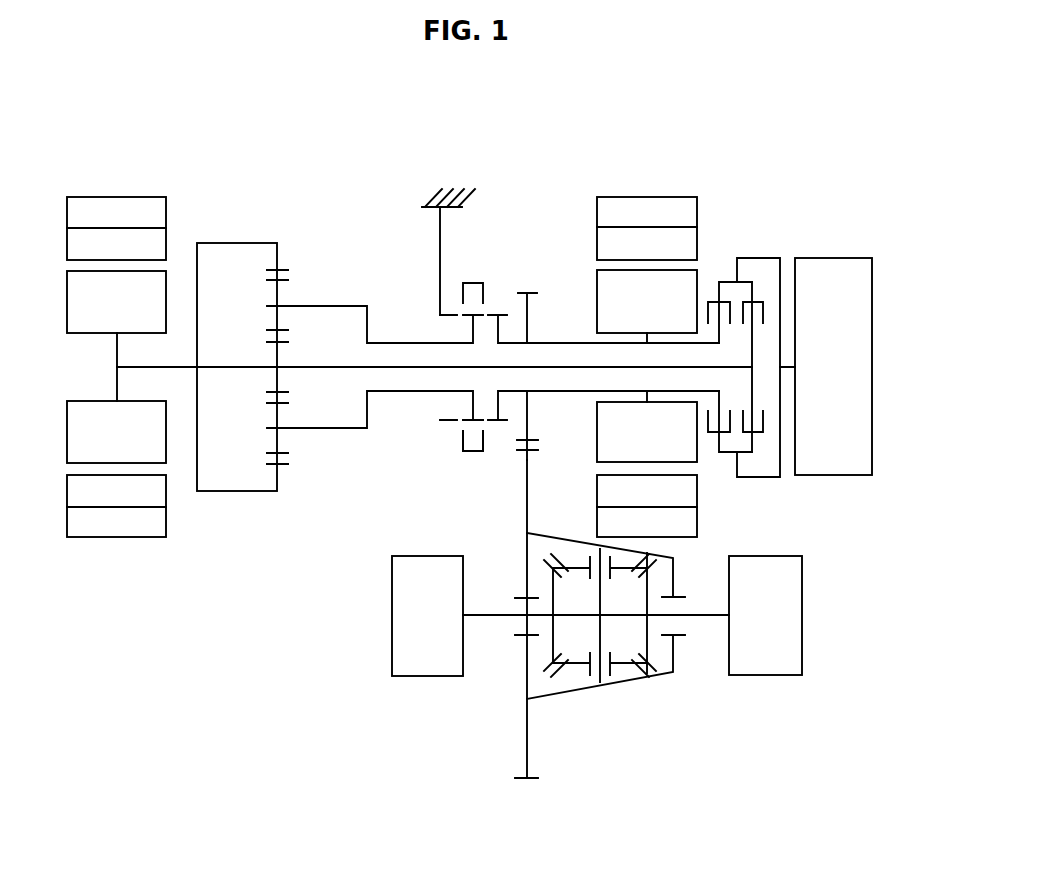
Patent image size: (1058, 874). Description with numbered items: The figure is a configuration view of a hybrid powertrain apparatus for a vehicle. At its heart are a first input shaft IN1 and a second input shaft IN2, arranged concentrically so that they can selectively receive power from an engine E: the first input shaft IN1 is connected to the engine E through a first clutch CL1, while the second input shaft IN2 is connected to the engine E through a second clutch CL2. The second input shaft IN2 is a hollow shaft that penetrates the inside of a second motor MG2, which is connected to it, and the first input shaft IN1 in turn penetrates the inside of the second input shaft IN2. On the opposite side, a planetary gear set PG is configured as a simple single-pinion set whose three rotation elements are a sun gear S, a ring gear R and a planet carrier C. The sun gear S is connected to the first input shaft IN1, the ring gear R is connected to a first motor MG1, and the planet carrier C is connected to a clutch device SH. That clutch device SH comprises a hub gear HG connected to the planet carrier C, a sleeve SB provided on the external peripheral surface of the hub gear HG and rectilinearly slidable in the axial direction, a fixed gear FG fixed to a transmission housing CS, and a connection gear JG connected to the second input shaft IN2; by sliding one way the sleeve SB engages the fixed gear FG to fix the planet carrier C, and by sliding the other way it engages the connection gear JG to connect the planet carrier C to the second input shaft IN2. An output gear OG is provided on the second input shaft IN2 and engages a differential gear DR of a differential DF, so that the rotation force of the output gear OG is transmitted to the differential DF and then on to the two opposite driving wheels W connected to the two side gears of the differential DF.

The first motor MG1 is at (115, 197).
The second motor MG2 is at (645, 196).
The planetary gear set PG is at (265, 498).
The ring gear R is at (284, 266).
The sun gear S is at (289, 341).
The planet carrier C is at (331, 305).
The first input shaft IN1 is at (328, 369).
The second input shaft IN2 is at (553, 342).
The transmission housing CS is at (440, 187).
The fixed gear FG is at (449, 315).
The connection gear JG is at (497, 313).
The clutch device SH is at (468, 456).
The hub gear HG is at (466, 416).
The sleeve SB is at (486, 453).
The output gear OG is at (523, 292).
The first clutch CL1 is at (757, 312).
The second clutch CL2 is at (716, 312).
The engine E is at (858, 371).
The differential gear DR is at (532, 782).
The differential DF is at (655, 687).
The driving wheel W is at (792, 618).